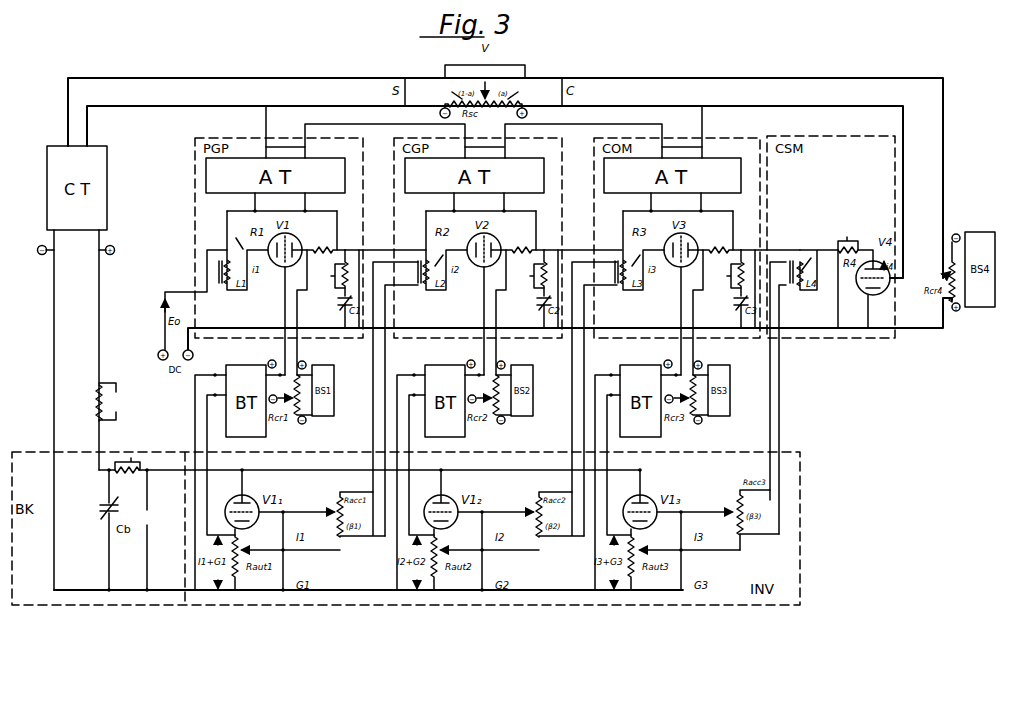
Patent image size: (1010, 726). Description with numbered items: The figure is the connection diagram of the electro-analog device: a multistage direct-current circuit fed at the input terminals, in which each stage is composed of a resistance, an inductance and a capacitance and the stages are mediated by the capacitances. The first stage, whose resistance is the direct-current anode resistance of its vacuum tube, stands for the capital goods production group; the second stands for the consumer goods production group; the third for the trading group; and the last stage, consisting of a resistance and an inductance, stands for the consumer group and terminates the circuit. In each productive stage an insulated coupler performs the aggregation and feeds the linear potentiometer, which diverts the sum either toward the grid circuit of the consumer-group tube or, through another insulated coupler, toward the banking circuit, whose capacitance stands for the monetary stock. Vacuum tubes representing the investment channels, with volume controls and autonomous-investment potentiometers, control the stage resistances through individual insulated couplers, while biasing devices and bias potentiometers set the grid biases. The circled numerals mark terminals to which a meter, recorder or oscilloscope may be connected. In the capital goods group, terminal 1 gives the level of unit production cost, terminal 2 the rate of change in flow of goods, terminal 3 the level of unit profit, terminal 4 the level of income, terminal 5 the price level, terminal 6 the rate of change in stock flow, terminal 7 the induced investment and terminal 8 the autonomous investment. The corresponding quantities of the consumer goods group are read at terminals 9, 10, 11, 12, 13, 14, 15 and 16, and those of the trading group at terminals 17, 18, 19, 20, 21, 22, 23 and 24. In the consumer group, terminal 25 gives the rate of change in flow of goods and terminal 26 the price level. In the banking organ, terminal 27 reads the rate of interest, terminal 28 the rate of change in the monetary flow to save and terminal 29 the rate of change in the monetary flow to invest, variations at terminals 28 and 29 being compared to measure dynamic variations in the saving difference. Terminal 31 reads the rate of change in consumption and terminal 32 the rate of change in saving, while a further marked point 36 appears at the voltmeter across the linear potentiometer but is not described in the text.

The terminal 1 is at (266, 211).
The terminal 2 is at (321, 211).
The terminal 3 is at (243, 250).
The terminal 4 is at (285, 147).
The terminal 5 is at (359, 289).
The terminal 6 is at (332, 276).
The terminal 7 is at (283, 531).
The terminal 8 is at (283, 570).
The terminal 9 is at (465, 211).
The terminal 10 is at (520, 211).
The terminal 11 is at (361, 514).
The terminal 12 is at (484, 147).
The terminal 13 is at (558, 289).
The terminal 14 is at (531, 276).
The terminal 15 is at (482, 531).
The terminal 16 is at (482, 570).
The terminal 17 is at (662, 211).
The terminal 18 is at (717, 211).
The terminal 19 is at (560, 514).
The terminal 20 is at (682, 147).
The terminal 21 is at (755, 289).
The terminal 22 is at (728, 276).
The terminal 23 is at (681, 531).
The terminal 24 is at (681, 570).
The terminal 25 is at (848, 239).
The terminal 26 is at (838, 289).
The terminal 27 is at (154, 530).
The terminal 28 is at (113, 402).
The terminal 29 is at (127, 459).
The terminal 31 is at (554, 92).
The terminal 32 is at (412, 92).
The voltmeter 36 is at (485, 68).